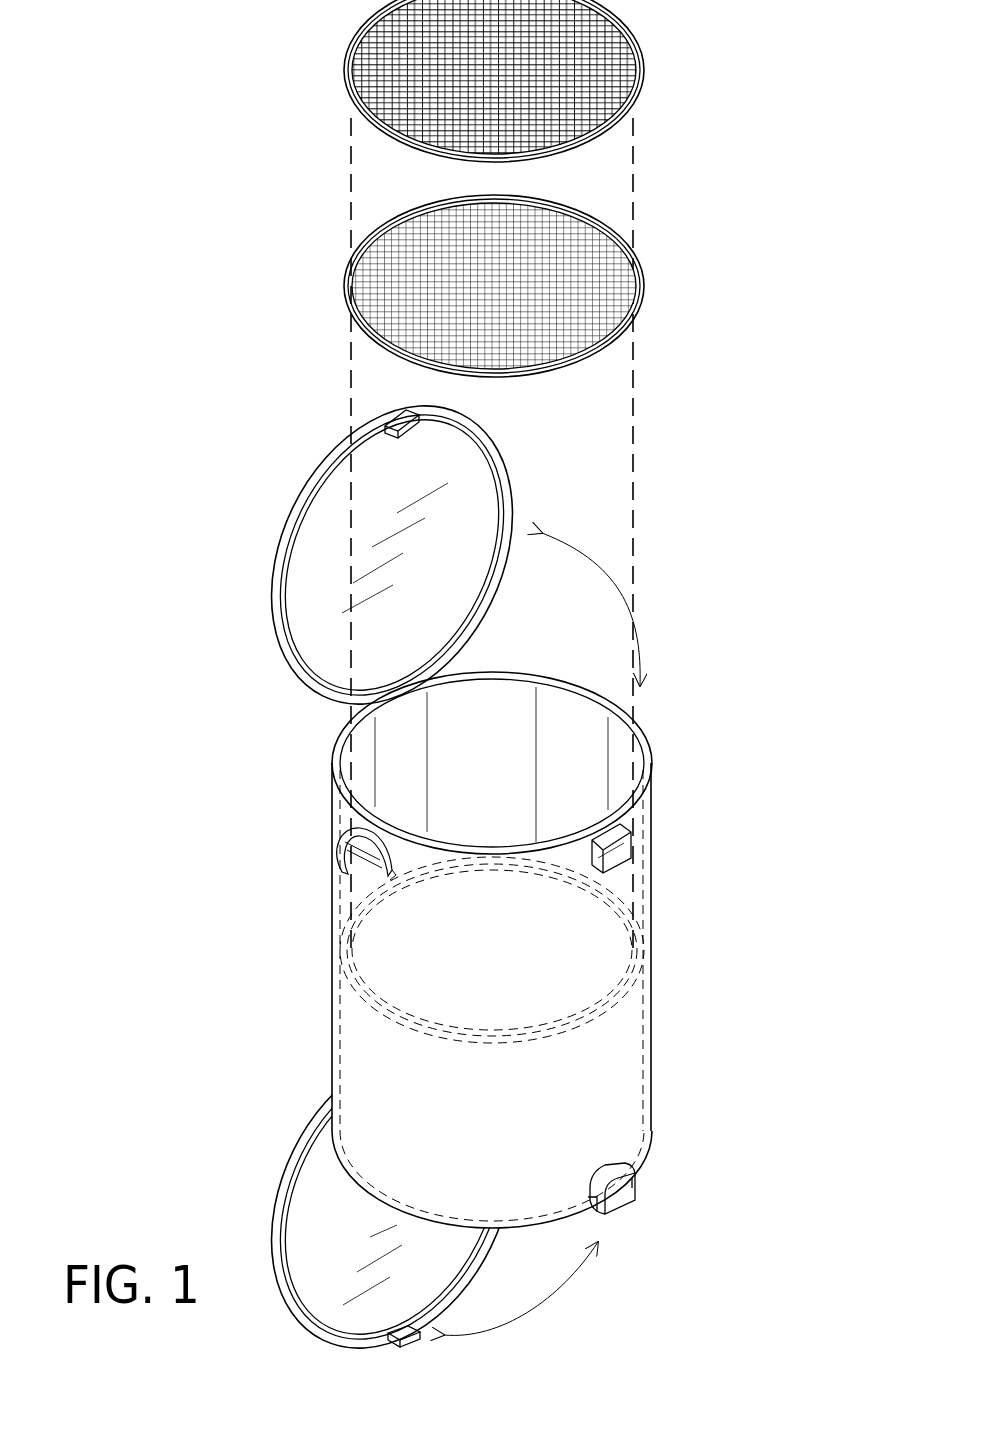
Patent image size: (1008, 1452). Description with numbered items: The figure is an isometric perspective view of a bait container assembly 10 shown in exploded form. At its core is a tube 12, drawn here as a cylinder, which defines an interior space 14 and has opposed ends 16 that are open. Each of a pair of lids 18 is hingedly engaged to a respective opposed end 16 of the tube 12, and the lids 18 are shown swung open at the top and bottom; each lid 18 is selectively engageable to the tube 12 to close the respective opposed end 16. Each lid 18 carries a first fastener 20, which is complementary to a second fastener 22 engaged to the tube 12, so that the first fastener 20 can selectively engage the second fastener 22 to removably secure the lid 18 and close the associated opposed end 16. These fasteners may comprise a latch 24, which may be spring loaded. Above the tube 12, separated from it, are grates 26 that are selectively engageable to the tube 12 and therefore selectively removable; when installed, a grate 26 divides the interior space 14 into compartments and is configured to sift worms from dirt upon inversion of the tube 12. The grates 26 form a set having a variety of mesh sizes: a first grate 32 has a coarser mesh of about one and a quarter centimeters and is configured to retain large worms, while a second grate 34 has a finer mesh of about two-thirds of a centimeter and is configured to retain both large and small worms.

The bait container assembly 10 is at (729, 455).
The tube 12 is at (655, 1045).
The interior space 14 is at (612, 1114).
The opposed ends 16 is at (522, 1211).
The lid 18 is at (287, 675).
The first fastener 20 is at (390, 413).
The second fastener 22 is at (620, 851).
The latch 24 is at (422, 1340).
The grate 26 is at (655, 80).
The first grate 32 is at (340, 65).
The second grate 34 is at (342, 290).